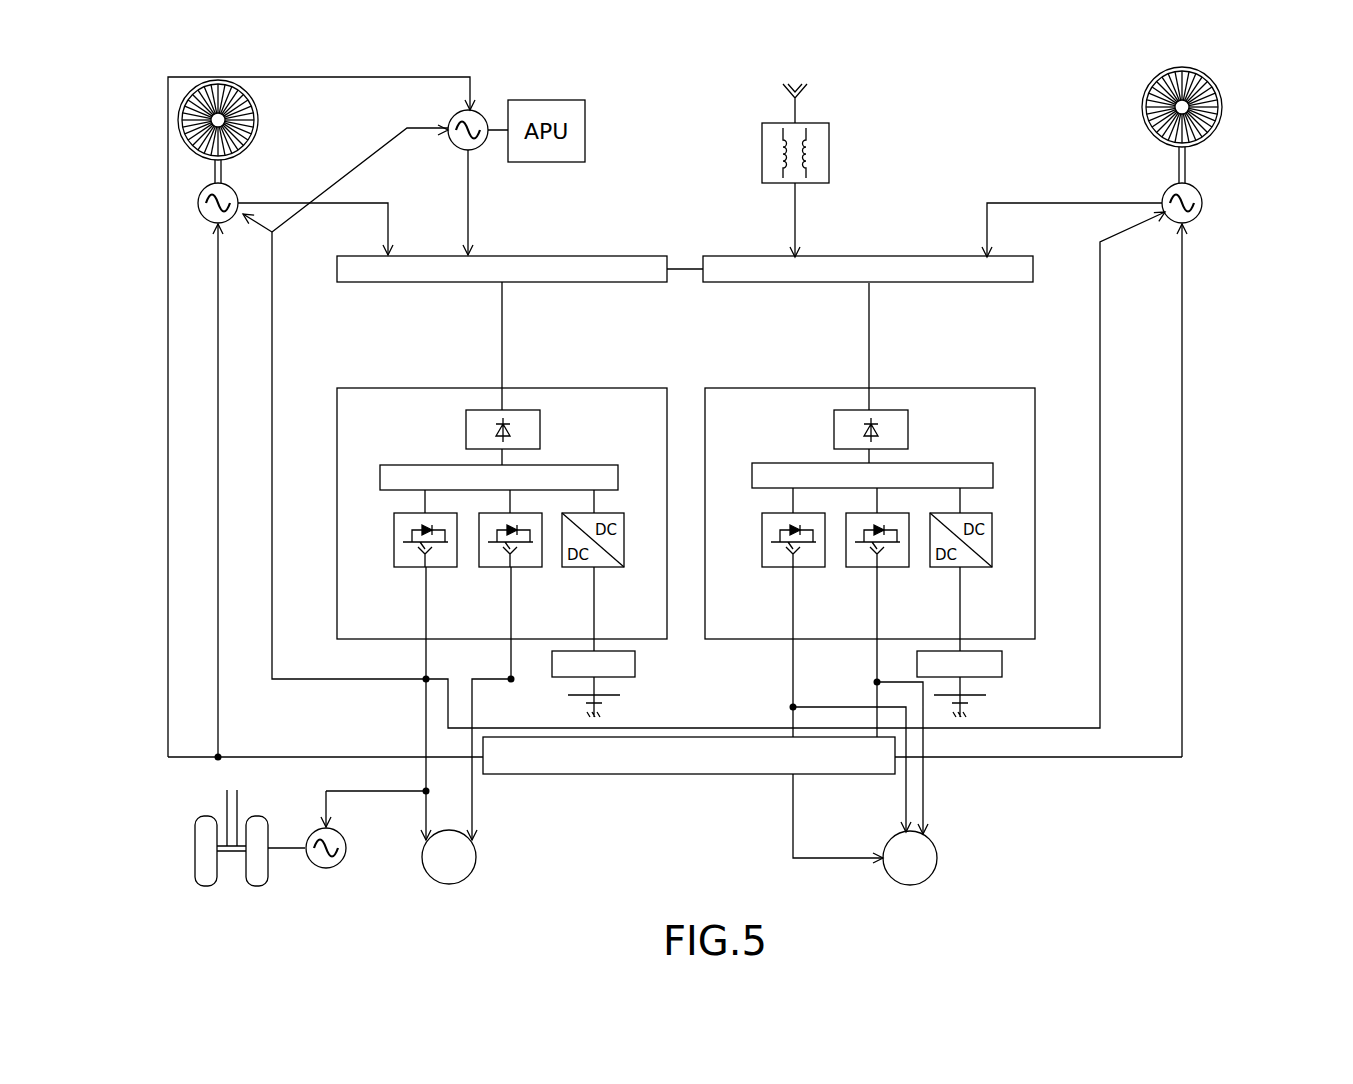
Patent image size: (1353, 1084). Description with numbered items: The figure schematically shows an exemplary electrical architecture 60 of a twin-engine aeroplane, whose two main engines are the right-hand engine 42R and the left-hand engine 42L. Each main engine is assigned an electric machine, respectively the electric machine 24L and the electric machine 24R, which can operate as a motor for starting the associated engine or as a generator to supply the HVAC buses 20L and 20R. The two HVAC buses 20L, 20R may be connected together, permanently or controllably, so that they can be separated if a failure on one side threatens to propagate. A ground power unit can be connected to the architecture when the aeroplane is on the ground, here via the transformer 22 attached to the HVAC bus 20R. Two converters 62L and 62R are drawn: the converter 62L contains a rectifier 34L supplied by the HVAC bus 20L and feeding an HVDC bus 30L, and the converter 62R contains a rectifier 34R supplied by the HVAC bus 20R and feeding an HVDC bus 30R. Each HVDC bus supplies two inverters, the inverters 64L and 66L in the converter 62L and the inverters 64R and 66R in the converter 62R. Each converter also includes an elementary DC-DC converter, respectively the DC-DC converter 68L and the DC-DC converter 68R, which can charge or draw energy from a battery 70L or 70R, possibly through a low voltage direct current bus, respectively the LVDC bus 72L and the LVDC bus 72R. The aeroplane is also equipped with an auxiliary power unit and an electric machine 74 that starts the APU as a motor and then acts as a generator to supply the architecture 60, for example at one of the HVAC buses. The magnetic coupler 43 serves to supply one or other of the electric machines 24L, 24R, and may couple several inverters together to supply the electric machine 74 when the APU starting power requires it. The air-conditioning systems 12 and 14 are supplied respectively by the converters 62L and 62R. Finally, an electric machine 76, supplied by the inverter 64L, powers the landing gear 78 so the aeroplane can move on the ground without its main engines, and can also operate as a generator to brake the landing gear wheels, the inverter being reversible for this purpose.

The electric machine 74 is at (479, 114).
The left-hand engine 42L is at (258, 120).
The right-hand engine 42R is at (1222, 107).
The electric machine 24L is at (200, 216).
The electric machine 24R is at (1202, 200).
The transformer 22 is at (829, 153).
The HVAC bus 20L is at (580, 268).
The HVAC bus 20R is at (948, 268).
The converter 62L is at (390, 423).
The converter 62R is at (1030, 423).
The rectifier 34L is at (527, 432).
The rectifier 34R is at (835, 435).
The HVDC bus 30L is at (607, 477).
The HVDC bus 30R is at (1002, 458).
The inverter 64L is at (408, 568).
The inverter 66L is at (493, 568).
The elementary DC-DC converter 68L is at (625, 543).
The inverter 64R is at (770, 568).
The inverter 66R is at (862, 568).
The elementary DC-DC converter 68R is at (992, 543).
The LVDC bus 72L is at (635, 658).
The LVDC bus 72R is at (1002, 658).
The battery 70L is at (617, 702).
The battery 70R is at (983, 702).
The magnetic coupler 43 is at (685, 760).
The air-conditioning system 12 is at (477, 857).
The air-conditioning system 14 is at (938, 858).
The electric machine 76 is at (330, 869).
The landing gear 78 is at (208, 805).
The electrical architecture 60 is at (1243, 496).